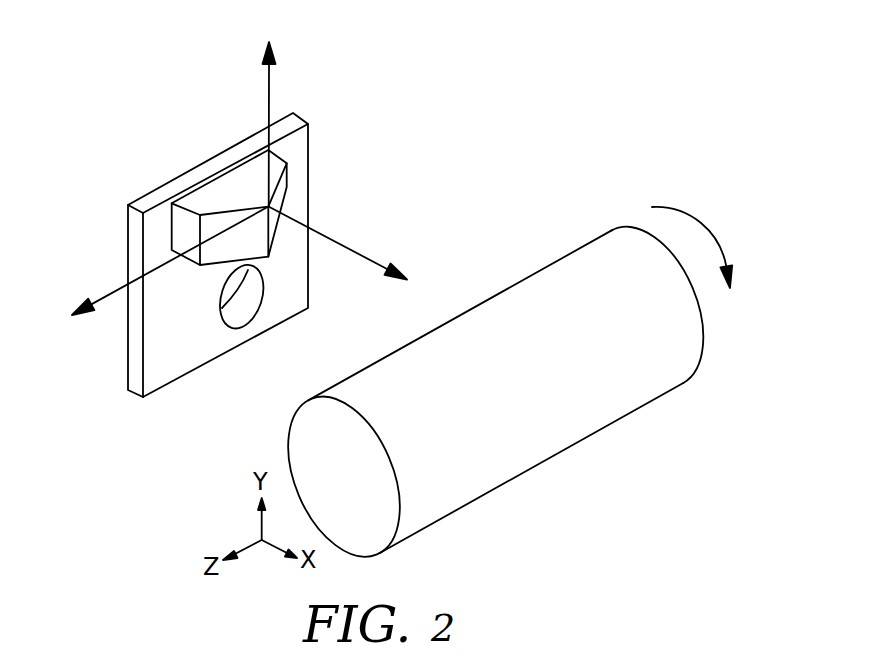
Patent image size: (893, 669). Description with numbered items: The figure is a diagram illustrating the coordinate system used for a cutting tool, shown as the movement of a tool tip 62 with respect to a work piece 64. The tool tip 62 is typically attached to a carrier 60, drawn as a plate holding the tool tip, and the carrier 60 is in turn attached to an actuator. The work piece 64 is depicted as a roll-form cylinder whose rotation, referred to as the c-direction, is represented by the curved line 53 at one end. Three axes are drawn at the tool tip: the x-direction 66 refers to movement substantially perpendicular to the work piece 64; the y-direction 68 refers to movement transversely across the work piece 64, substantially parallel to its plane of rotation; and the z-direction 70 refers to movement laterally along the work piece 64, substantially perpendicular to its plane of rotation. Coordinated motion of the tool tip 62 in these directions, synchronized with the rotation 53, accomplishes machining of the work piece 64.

The line representing rotational movement 53 is at (685, 208).
The carrier 60 is at (151, 198).
The tool tip 62 is at (237, 187).
The work piece 64 is at (568, 413).
The x-direction 66 is at (348, 245).
The y-direction 68 is at (271, 83).
The z-direction 70 is at (115, 285).